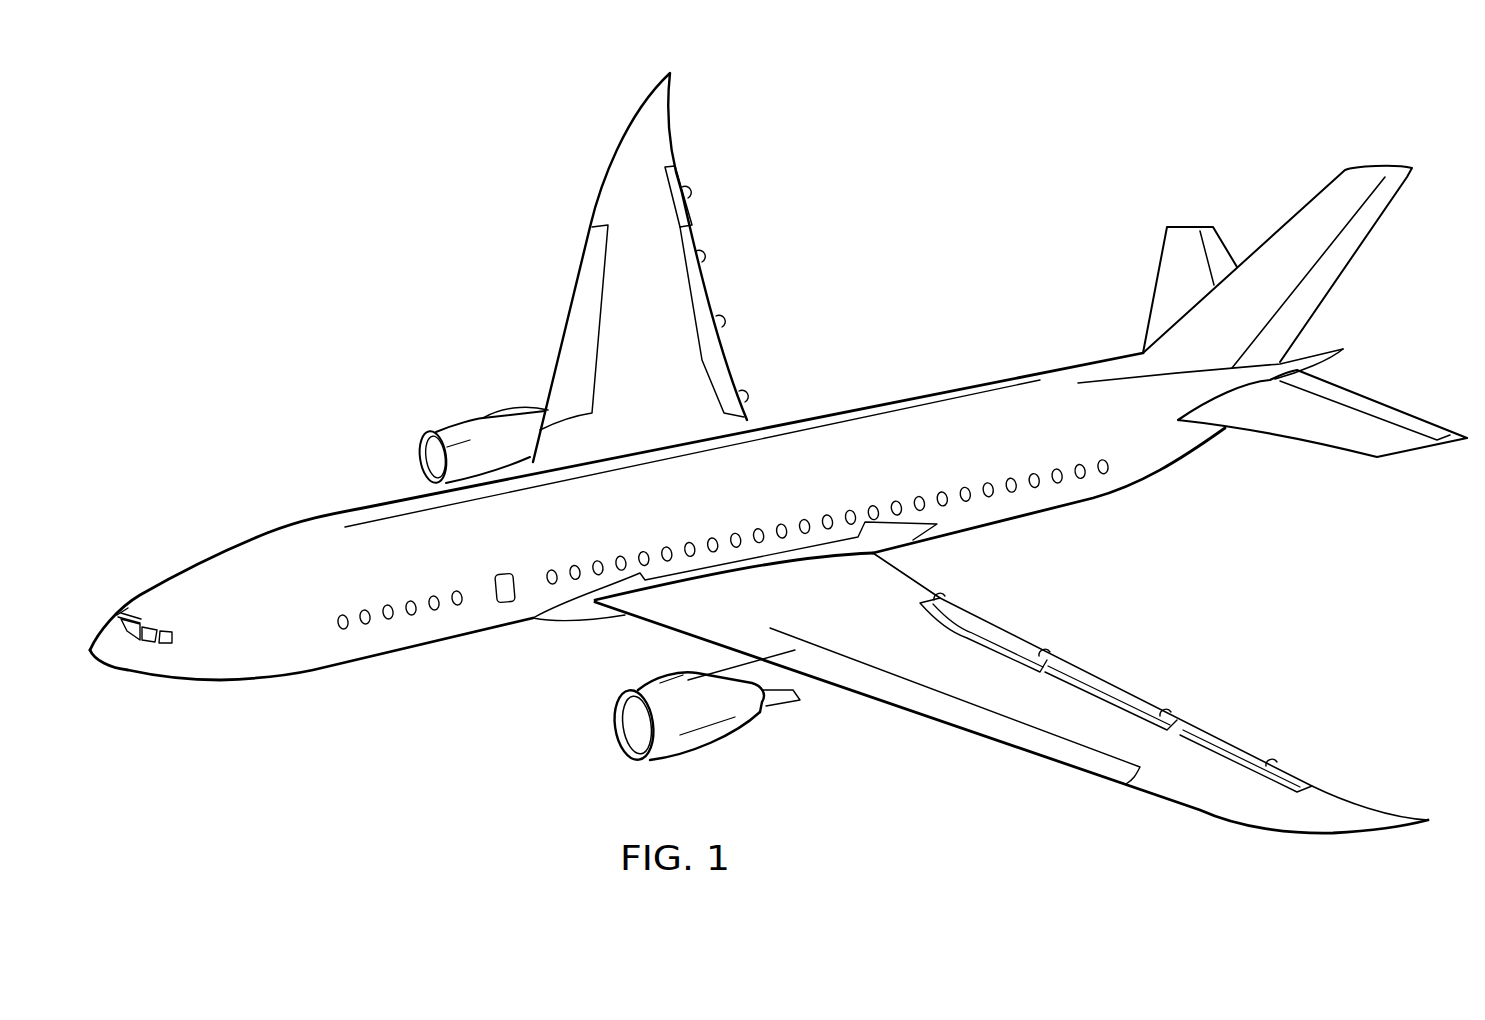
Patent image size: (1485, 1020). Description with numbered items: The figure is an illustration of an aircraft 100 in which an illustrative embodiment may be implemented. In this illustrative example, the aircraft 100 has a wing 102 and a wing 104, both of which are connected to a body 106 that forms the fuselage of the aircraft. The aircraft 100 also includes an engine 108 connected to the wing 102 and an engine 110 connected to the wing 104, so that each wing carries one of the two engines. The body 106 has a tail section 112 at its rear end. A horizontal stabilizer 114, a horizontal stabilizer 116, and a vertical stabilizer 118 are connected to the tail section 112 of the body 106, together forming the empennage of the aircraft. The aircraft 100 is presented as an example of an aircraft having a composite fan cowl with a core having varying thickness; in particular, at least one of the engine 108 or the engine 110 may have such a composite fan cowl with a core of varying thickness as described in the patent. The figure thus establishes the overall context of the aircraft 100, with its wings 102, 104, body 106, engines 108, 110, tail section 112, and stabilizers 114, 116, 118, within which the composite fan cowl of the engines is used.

The aircraft 100 is at (372, 226).
The wing 102 is at (663, 110).
The wing 104 is at (1268, 832).
The body 106 is at (274, 532).
The engine 108 is at (460, 413).
The engine 110 is at (707, 752).
The tail section 112 is at (1223, 489).
The horizontal stabilizer 114 is at (1150, 283).
The horizontal stabilizer 116 is at (1327, 447).
The vertical stabilizer 118 is at (1353, 255).